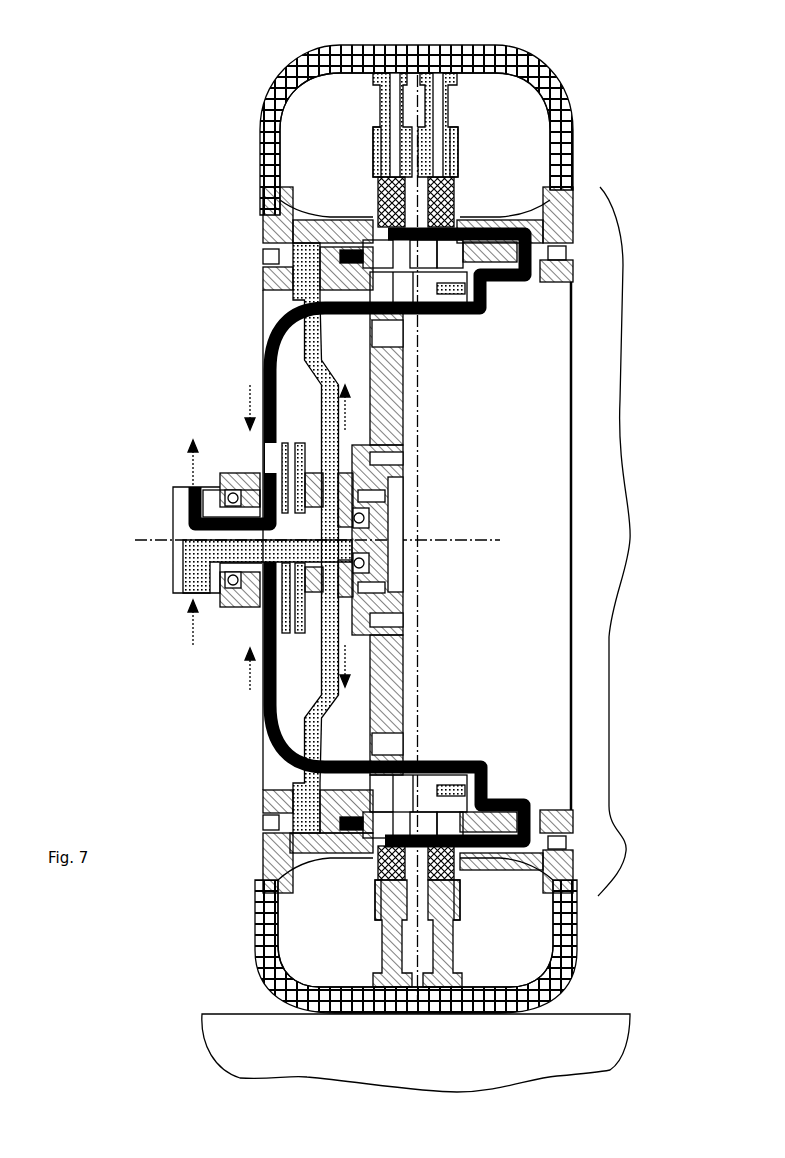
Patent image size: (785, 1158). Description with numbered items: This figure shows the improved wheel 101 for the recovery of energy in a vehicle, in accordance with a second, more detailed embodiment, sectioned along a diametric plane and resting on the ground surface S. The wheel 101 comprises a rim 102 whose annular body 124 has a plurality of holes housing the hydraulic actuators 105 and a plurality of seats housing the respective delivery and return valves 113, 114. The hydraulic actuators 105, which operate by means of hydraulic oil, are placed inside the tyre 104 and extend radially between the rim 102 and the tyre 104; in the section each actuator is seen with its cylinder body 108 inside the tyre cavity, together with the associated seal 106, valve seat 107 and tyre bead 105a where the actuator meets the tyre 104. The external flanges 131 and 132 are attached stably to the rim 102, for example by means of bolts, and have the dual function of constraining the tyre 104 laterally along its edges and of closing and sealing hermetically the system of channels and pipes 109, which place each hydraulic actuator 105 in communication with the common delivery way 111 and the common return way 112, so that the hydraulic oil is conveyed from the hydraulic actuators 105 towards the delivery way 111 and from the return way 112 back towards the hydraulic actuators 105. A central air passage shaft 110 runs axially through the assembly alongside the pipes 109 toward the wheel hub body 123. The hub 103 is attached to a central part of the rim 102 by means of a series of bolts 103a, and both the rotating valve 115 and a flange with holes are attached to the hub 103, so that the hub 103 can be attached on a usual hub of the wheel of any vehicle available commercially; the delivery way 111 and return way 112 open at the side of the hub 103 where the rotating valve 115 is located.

The improved wheel 101 is at (126, 50).
The rim 102 is at (636, 541).
The hub 103 is at (368, 568).
The bolts 103a is at (404, 460).
The tyre 104 is at (551, 82).
The hydraulic actuators 105 is at (346, 137).
The tire bead 105a is at (376, 208).
The seal 106 is at (376, 190).
The valve seat 107 is at (376, 172).
The valve body 108 is at (384, 112).
The system of channels and pipes 109 is at (266, 338).
The air passage shaft 110 is at (323, 352).
The common delivery way 111 is at (192, 468).
The common return way 112 is at (192, 630).
The delivery valve 113 is at (573, 214).
The return valve 114 is at (268, 230).
The rotating valve 115 is at (240, 460).
The wheel hub 123 is at (402, 398).
The annular body 124 is at (262, 294).
The external flange 131 is at (262, 268).
The external flange 132 is at (573, 256).
The road surface S is at (422, 1063).